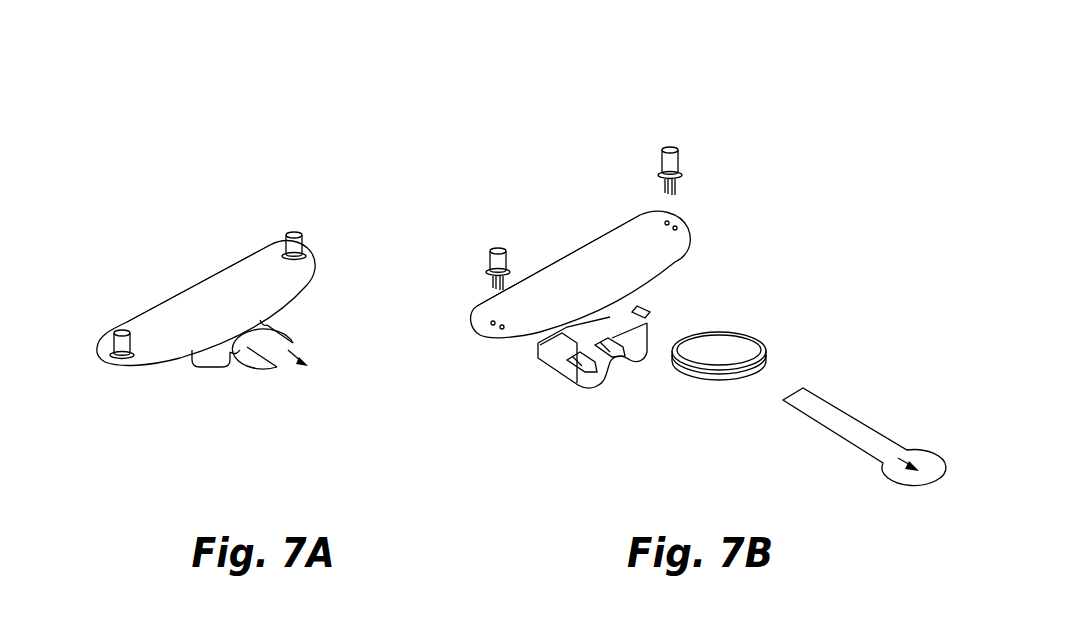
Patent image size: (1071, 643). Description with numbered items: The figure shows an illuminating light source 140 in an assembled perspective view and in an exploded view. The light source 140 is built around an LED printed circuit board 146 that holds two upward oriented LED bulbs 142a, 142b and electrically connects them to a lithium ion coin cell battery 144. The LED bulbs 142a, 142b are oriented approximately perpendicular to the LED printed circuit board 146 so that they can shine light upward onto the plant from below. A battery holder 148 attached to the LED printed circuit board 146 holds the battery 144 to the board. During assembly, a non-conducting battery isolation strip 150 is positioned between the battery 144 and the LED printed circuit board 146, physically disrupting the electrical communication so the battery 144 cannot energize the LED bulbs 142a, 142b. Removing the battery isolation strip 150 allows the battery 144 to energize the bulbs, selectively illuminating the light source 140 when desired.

In FIG. 7A, the light source 140 is at (197, 236).
In FIG. 7B, the light source 140 is at (585, 205).
In FIG. 7A, the LED bulb 142a is at (115, 335).
In FIG. 7B, the LED bulb 142a is at (488, 263).
In FIG. 7A, the LED bulb 142b is at (286, 236).
In FIG. 7B, the LED bulb 142b is at (660, 160).
In FIG. 7A, the lithium ion coin cell battery 144 is at (241, 347).
In FIG. 7B, the lithium ion coin cell battery 144 is at (707, 362).
In FIG. 7A, the LED printed circuit board 146 is at (173, 320).
In FIG. 7B, the LED printed circuit board 146 is at (567, 288).
In FIG. 7A, the battery holder 148 is at (212, 362).
In FIG. 7B, the battery holder 148 is at (567, 368).
In FIG. 7A, the battery isolation strip 150 is at (306, 376).
In FIG. 7B, the battery isolation strip 150 is at (921, 452).